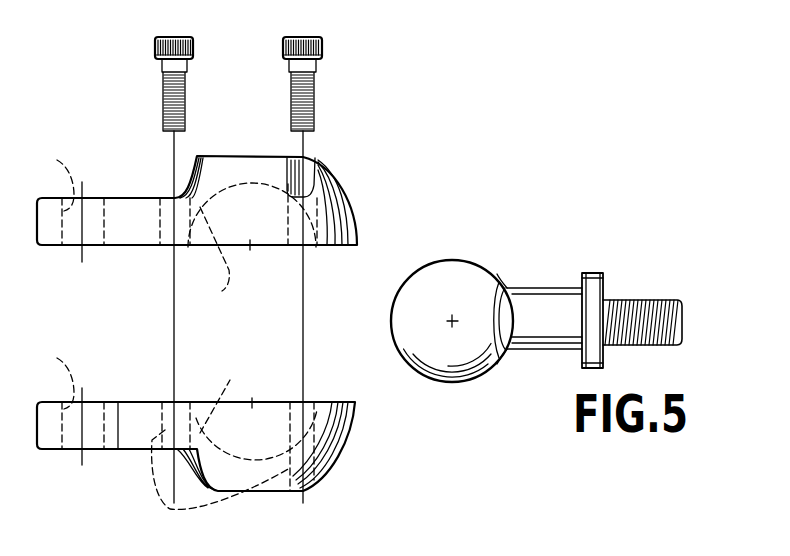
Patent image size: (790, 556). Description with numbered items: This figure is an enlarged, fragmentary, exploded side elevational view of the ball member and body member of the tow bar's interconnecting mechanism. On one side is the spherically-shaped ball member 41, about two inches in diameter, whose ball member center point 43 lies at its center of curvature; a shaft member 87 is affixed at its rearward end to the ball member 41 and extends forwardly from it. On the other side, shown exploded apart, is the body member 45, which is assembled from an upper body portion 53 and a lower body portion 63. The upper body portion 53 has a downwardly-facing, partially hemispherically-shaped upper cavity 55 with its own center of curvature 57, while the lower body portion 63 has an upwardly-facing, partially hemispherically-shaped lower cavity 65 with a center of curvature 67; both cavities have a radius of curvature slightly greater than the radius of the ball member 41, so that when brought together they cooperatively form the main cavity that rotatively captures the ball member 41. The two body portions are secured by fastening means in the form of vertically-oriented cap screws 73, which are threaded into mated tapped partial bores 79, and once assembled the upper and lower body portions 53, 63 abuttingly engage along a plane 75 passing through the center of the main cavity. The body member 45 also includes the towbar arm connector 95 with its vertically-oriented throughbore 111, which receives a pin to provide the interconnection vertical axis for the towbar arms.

The ball member 41 is at (536, 294).
The ball member center point 43 is at (455, 321).
The body member 45 is at (118, 185).
The upper body portion 53 is at (330, 188).
The upper cavity 55 is at (228, 287).
The center of curvature 57 is at (250, 246).
The lower body portion 63 is at (338, 437).
The lower cavity 65 is at (228, 384).
The center of curvature 67 is at (254, 403).
The cap screws 73 is at (283, 45).
The plane 75 is at (303, 247).
The tapped partial bores 79 is at (168, 509).
The shaft member 87 is at (570, 306).
The towbar arm connector 95 is at (118, 420).
The throughbore 111 is at (56, 160).